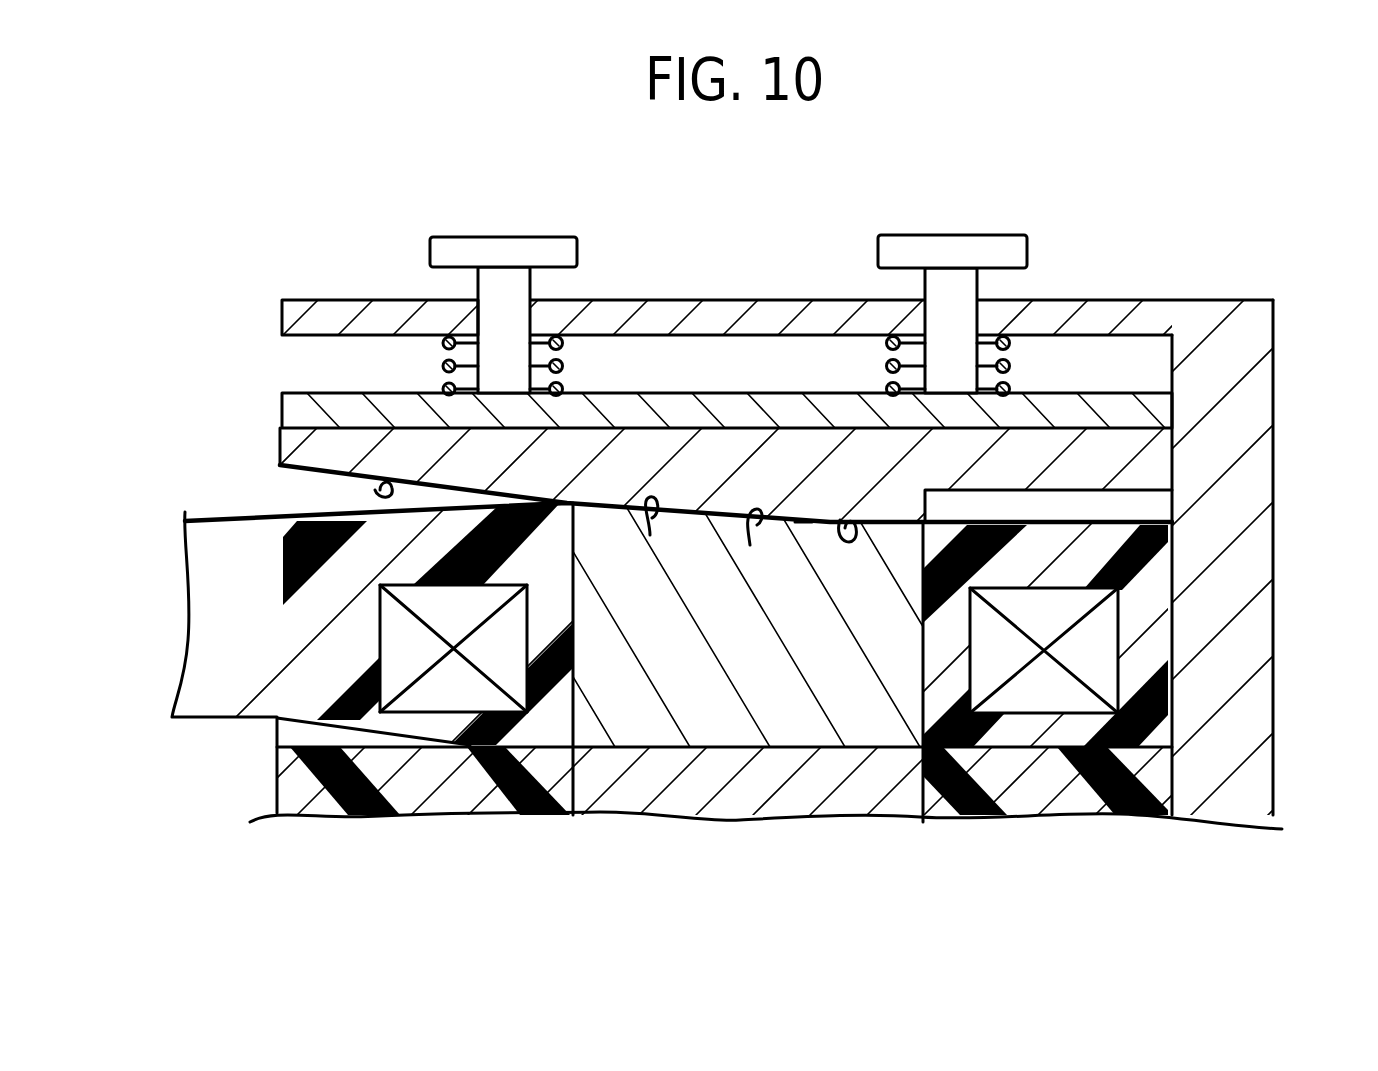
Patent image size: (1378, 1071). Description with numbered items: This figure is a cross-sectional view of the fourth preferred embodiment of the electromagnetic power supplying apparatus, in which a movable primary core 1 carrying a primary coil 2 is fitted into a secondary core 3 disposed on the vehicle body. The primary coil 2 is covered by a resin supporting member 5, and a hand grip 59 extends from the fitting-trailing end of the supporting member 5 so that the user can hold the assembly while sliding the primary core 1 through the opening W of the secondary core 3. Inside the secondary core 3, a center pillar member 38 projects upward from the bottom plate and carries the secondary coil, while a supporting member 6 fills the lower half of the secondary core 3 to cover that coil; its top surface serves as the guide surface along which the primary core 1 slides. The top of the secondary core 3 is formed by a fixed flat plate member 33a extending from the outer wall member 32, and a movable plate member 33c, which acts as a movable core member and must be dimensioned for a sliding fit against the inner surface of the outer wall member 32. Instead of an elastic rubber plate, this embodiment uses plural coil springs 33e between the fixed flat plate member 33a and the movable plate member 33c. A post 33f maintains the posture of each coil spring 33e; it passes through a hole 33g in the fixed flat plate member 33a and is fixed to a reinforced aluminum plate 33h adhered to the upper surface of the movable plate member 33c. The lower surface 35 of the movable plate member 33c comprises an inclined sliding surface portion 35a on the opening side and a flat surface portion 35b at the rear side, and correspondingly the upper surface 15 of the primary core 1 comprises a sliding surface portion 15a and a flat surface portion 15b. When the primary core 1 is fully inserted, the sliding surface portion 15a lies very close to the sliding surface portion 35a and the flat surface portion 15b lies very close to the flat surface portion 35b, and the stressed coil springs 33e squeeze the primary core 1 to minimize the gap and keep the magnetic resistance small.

The primary core 1 is at (810, 727).
The primary coil 2 is at (403, 650).
The secondary core 3 is at (960, 832).
The supporting member 5 is at (279, 703).
The supporting member 6 is at (1062, 790).
The upper surface 15 is at (803, 520).
The sliding surface portion 15a is at (650, 535).
The flat surface portion 15b is at (750, 545).
The outer wall member 32 is at (1240, 428).
The fixed flat plate member 33a is at (613, 317).
The movable plate member 33c is at (692, 455).
The coil spring 33e is at (1012, 363).
The post 33f is at (952, 268).
The hole 33g is at (478, 315).
The reinforced plate 33h is at (1120, 413).
The lower surface 35 is at (840, 520).
The sliding surface portion 35a is at (380, 490).
The flat surface portion 35b is at (870, 527).
The center pillar member 38 is at (712, 793).
The hand grip 59 is at (207, 568).
The opening W is at (265, 475).